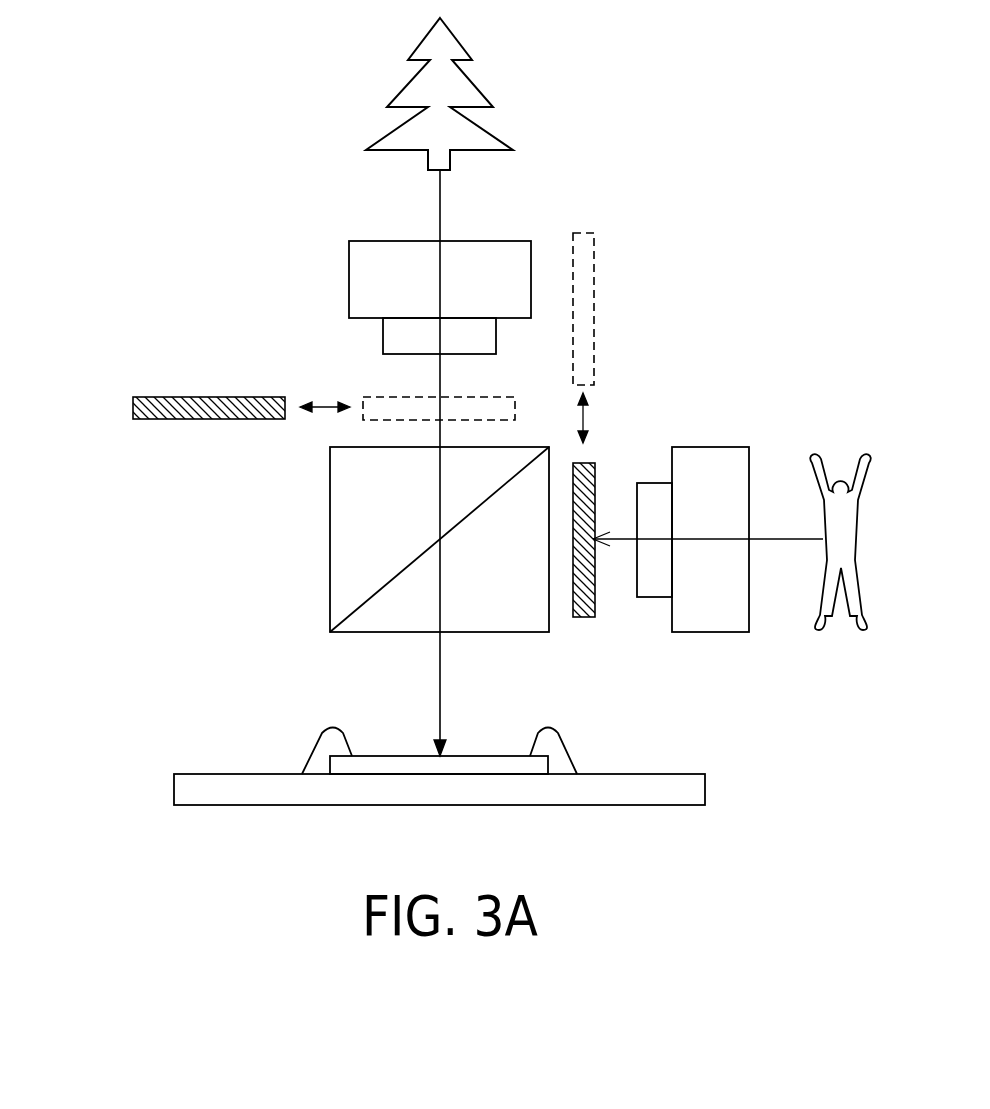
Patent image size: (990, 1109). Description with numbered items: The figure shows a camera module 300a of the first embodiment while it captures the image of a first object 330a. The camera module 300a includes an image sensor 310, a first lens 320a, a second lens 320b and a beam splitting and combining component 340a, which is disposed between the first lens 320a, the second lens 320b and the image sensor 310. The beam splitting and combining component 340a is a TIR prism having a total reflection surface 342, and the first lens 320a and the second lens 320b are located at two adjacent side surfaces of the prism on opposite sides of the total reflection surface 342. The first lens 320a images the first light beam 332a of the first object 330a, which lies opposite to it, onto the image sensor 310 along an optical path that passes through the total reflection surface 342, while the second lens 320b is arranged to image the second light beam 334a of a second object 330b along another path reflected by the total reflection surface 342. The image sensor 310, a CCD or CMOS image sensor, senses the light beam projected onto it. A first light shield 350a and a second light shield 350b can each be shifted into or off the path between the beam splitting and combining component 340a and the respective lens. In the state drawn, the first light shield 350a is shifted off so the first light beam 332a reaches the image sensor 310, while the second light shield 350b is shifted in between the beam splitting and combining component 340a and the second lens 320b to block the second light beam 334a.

The camera module 300a is at (501, 441).
The image sensor 310 is at (443, 765).
The first lens 320a is at (493, 260).
The second lens 320b is at (715, 468).
The first object 330a is at (460, 88).
The second object 330b is at (857, 523).
The first light beam 332a is at (438, 208).
The second light beam 334a is at (783, 538).
The beam splitting and combining component 340a is at (385, 533).
The total reflection surface 342 is at (397, 596).
The first light shield 350a is at (398, 410).
The second light shield 350b is at (583, 300).